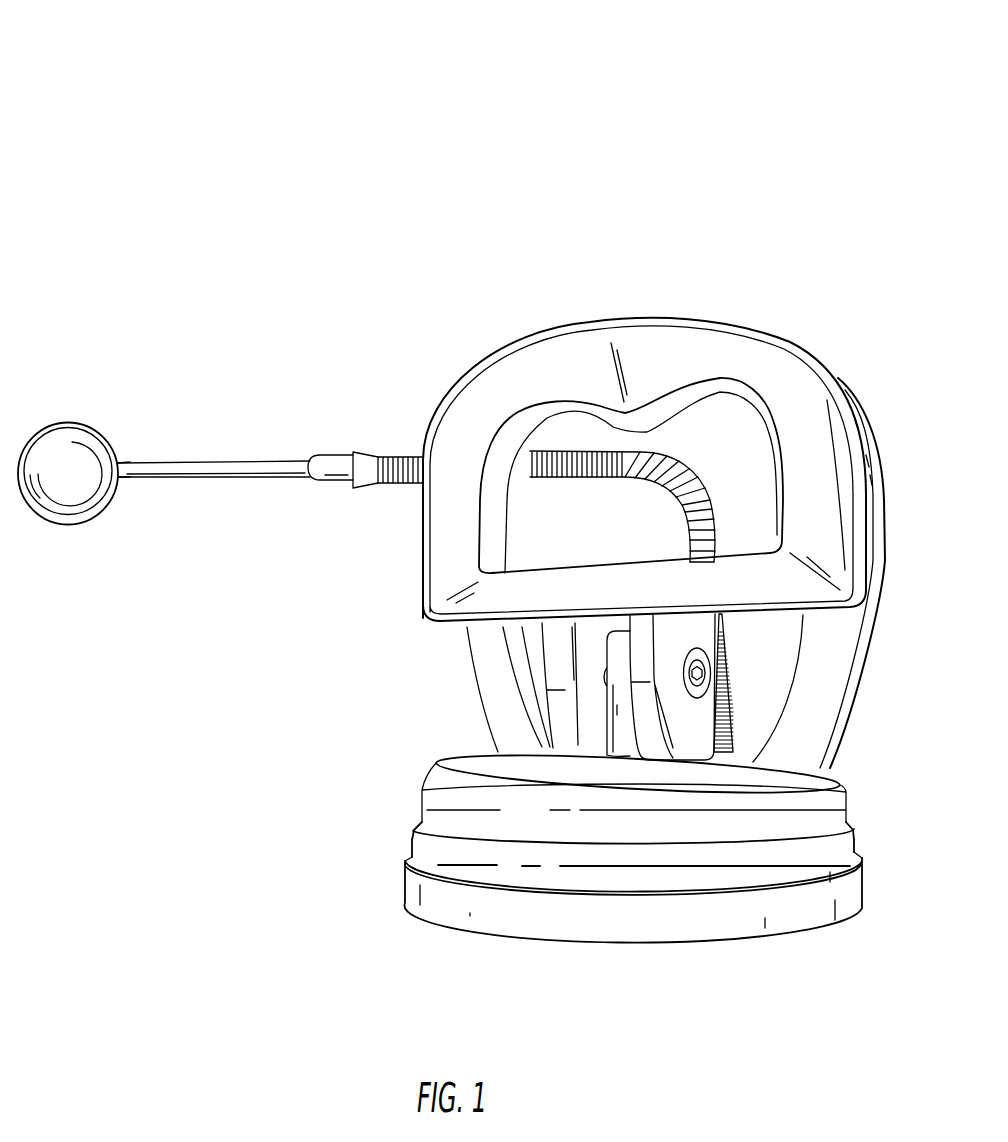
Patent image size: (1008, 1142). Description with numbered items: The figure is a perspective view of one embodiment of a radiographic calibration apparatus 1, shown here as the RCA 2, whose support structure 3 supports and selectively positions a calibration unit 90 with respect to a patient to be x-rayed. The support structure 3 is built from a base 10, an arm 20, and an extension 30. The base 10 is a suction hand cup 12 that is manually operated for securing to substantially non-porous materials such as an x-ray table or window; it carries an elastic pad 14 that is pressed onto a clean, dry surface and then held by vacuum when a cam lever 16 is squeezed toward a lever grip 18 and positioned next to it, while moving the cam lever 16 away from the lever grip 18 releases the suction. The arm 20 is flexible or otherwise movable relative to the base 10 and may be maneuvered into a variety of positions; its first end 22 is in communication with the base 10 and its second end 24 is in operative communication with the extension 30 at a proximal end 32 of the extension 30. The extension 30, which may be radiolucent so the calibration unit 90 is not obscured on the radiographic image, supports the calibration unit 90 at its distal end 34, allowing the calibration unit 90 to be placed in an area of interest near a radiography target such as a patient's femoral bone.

The radiographic calibration apparatus 1 is at (212, 100).
The RCA 2 is at (245, 273).
The support structure 3 is at (278, 587).
The base 10 is at (382, 787).
The suction hand cup 12 is at (830, 790).
The elastic pad 14 is at (498, 928).
The cam lever 16 is at (700, 333).
The lever grip 18 is at (833, 663).
The arm 20 is at (600, 465).
The first end 22 is at (740, 752).
The second end 24 is at (350, 453).
The extension 30 is at (233, 478).
The proximal end 32 is at (333, 485).
The distal end 34 is at (118, 457).
The calibration unit 90 is at (73, 449).